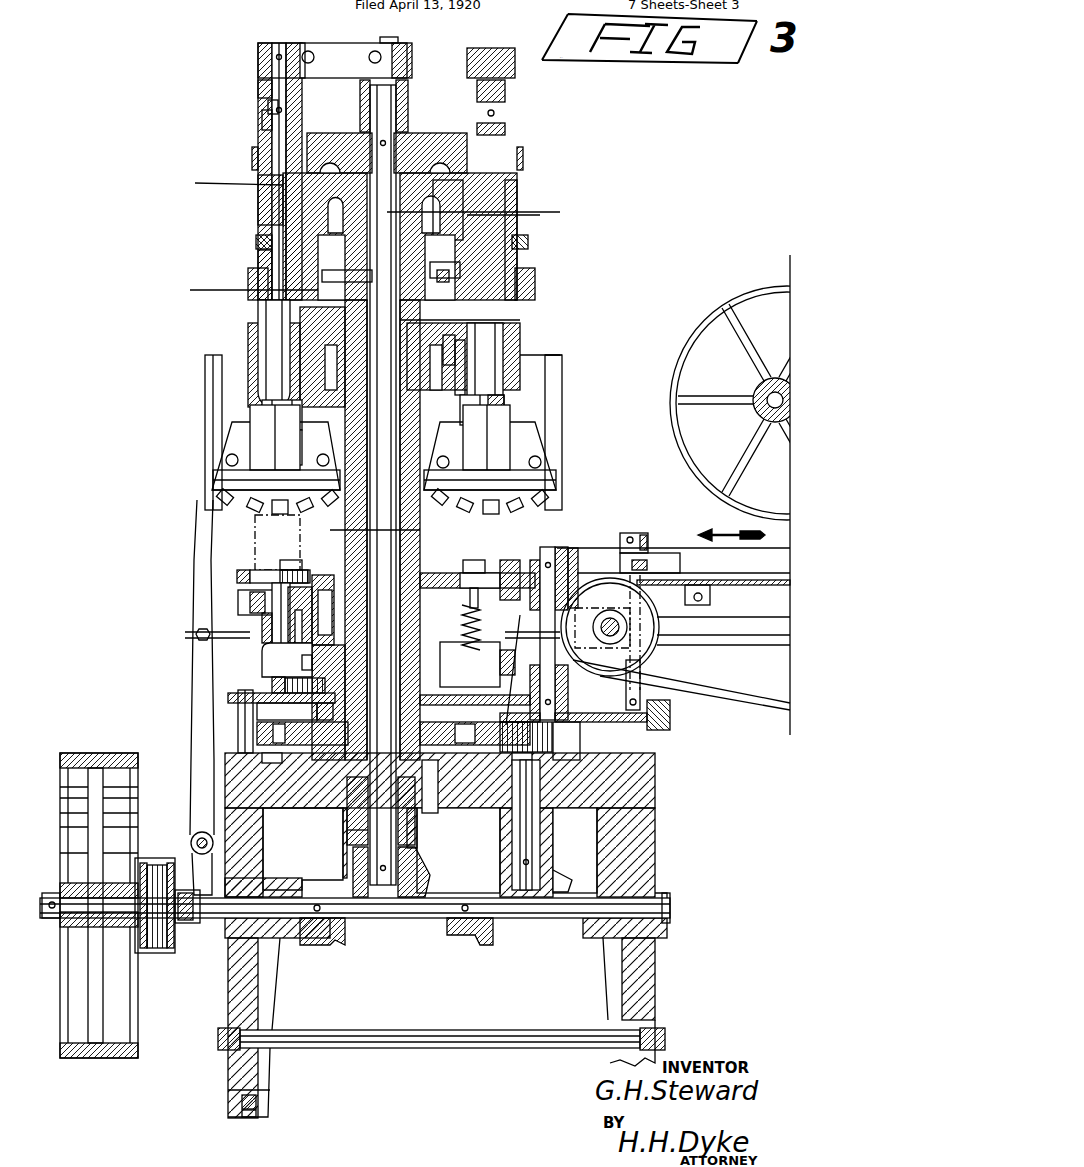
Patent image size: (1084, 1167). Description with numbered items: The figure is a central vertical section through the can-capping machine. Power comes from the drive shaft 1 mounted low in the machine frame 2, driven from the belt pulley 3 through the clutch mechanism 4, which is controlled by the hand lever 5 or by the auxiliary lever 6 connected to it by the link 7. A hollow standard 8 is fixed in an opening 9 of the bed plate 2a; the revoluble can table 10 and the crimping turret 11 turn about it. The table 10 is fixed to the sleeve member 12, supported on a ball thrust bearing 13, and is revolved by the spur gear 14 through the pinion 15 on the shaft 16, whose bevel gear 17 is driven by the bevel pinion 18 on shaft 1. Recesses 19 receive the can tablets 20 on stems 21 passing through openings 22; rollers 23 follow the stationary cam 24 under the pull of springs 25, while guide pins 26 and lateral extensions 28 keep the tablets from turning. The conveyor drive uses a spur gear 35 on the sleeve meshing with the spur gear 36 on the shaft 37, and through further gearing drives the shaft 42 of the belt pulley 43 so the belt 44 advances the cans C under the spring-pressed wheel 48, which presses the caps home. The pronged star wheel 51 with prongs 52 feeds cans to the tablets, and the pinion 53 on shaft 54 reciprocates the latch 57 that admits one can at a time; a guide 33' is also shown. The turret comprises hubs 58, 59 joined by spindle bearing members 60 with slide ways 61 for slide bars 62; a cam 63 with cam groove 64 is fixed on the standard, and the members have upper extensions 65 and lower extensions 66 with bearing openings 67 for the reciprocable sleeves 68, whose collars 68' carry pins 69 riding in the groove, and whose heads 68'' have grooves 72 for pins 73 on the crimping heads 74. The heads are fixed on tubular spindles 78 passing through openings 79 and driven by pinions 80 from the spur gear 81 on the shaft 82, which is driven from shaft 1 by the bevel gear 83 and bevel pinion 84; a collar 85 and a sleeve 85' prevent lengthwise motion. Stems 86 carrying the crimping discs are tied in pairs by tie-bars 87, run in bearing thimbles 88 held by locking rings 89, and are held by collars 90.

The drive shaft 1 is at (398, 915).
The machine frame 2 is at (670, 843).
The bed plate 2a is at (655, 800).
The belt pulley 3 is at (138, 1015).
The clutch mechanism 4 is at (182, 870).
The hand lever 5 is at (190, 650).
The auxiliary lever 6 is at (225, 691).
The link 7 is at (193, 281).
The hollow standard 8 is at (360, 790).
The opening 9 is at (355, 830).
The revoluble can table 10 is at (328, 575).
The crimping turret 11 is at (226, 185).
The sleeve member 12 is at (418, 560).
The ball thrust bearing 13 is at (428, 800).
The spur gear 14 is at (257, 734).
The pinion 15 is at (580, 742).
The shaft 16 is at (553, 830).
The bevel gear 17 is at (570, 882).
The bevel pinion 18 is at (485, 943).
The recesses 19 is at (500, 612).
The can tablets 20 is at (258, 570).
The stems 21 is at (272, 592).
The openings 22 is at (262, 612).
The rollers 23 is at (262, 682).
The stationary cam 24 is at (228, 705).
The springs 25 is at (262, 652).
The guide pins 26 is at (316, 667).
The lateral extensions 28 is at (458, 668).
The guide 33' is at (277, 542).
The spur gear 35 is at (295, 711).
The spur gear 36 is at (580, 712).
The shaft 37 is at (540, 660).
The shaft 42 is at (610, 617).
The belt pulley 43 is at (645, 655).
The belt 44 is at (772, 700).
The wheel 48 is at (745, 290).
The pronged star wheel or dial 51 is at (575, 550).
The prongs 52 is at (605, 540).
The pinion 53 is at (670, 722).
The shaft 54 is at (640, 690).
The latch or finger 57 is at (650, 560).
The lower hub 58 is at (520, 325).
The upper hub 59 is at (440, 180).
The spindle bearing members 60 is at (283, 205).
The slide ways 61 is at (465, 365).
The slide bars 62 is at (455, 350).
The cam 63 is at (440, 300).
The cam groove 64 is at (442, 267).
The upper extensions 65 is at (540, 215).
The lower extensions 66 is at (248, 372).
The bearing openings 67 is at (560, 352).
The longitudinally reciprocable sleeves 68 is at (388, 407).
The collars 68' is at (380, 289).
The heads 68'' is at (237, 434).
The pins or stub shafts 69 is at (345, 267).
The grooves 72 is at (504, 408).
The pins 73 is at (500, 430).
The crimping heads 74 is at (240, 478).
The tubular spindles 78 is at (258, 255).
The openings 79 is at (258, 195).
The pinions 80 is at (252, 158).
The spur gear 81 is at (325, 155).
The shaft 82 is at (372, 128).
The bevel gear 83 is at (425, 883).
The bevel pinion 84 is at (340, 946).
The collar 85 is at (380, 243).
The sleeve 85' is at (390, 107).
The stem 86 is at (280, 43).
The tie-bars 87 is at (345, 45).
The bearing thimbles 88 is at (258, 66).
The threaded locking rings 89 is at (258, 88).
The collars 90 is at (268, 107).
The cans C is at (505, 538).